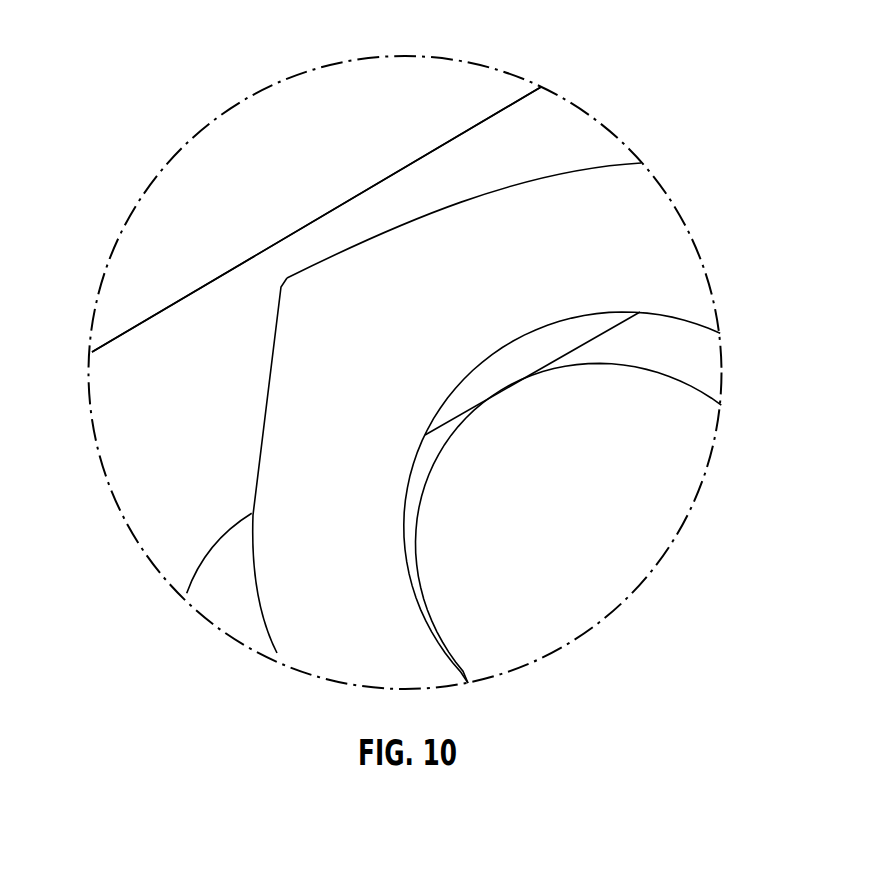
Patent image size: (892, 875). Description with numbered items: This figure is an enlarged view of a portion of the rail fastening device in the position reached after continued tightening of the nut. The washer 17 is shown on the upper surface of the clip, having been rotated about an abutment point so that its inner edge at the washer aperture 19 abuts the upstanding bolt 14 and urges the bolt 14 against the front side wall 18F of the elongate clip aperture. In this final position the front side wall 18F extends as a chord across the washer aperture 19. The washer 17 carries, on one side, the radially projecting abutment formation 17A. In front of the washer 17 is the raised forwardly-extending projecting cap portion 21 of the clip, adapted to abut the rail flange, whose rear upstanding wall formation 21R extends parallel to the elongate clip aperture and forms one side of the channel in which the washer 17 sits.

The upstanding bolt 14 is at (623, 573).
The washer 17 is at (685, 260).
The radially projecting abutment formation 17A is at (286, 276).
The front side wall 18F is at (577, 347).
The washer aperture 19 is at (708, 382).
The projecting cap portion 21 is at (370, 78).
The rear upstanding wall formation 21R is at (151, 318).